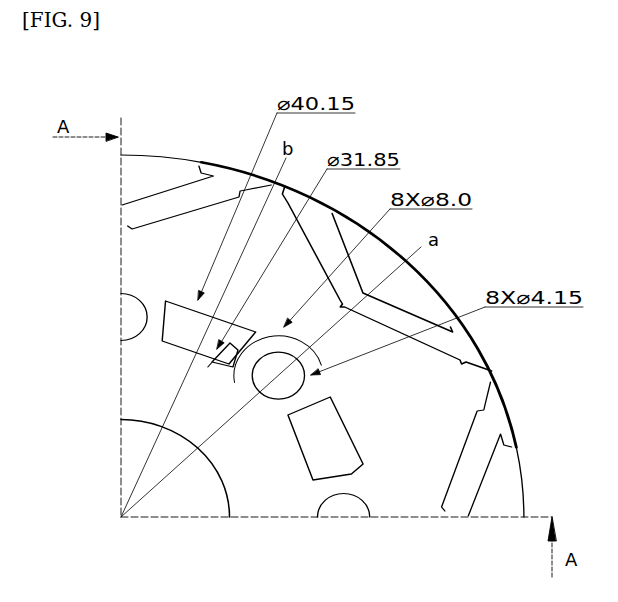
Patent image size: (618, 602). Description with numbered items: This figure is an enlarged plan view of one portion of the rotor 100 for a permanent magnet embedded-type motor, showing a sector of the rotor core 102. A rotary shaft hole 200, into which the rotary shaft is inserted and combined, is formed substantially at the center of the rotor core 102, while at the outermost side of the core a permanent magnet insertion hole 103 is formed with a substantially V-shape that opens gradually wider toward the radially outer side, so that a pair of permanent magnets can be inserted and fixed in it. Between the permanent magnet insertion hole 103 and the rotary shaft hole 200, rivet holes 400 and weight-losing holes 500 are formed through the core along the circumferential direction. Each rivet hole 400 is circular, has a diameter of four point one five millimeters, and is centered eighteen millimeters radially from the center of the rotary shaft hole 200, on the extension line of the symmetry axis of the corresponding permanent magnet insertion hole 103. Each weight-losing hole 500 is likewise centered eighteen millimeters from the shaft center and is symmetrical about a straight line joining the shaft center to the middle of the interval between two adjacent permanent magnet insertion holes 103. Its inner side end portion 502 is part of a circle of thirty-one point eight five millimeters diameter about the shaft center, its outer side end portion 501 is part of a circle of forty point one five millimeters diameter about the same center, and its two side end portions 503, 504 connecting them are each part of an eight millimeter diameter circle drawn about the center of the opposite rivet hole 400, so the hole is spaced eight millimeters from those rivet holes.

The rotor core 100 is at (117, 84).
The rotor core 102 is at (180, 157).
The permanent magnet insertion hole 103 is at (497, 470).
The rotary shaft hole 200 is at (222, 485).
The rivet hole 400 is at (280, 402).
The weight-losing hole 500 is at (153, 356).
The outer side end portion 501 is at (328, 217).
The inner side end portion 502 is at (205, 352).
The side end portion 503 is at (152, 352).
The side end portion 504 is at (210, 365).